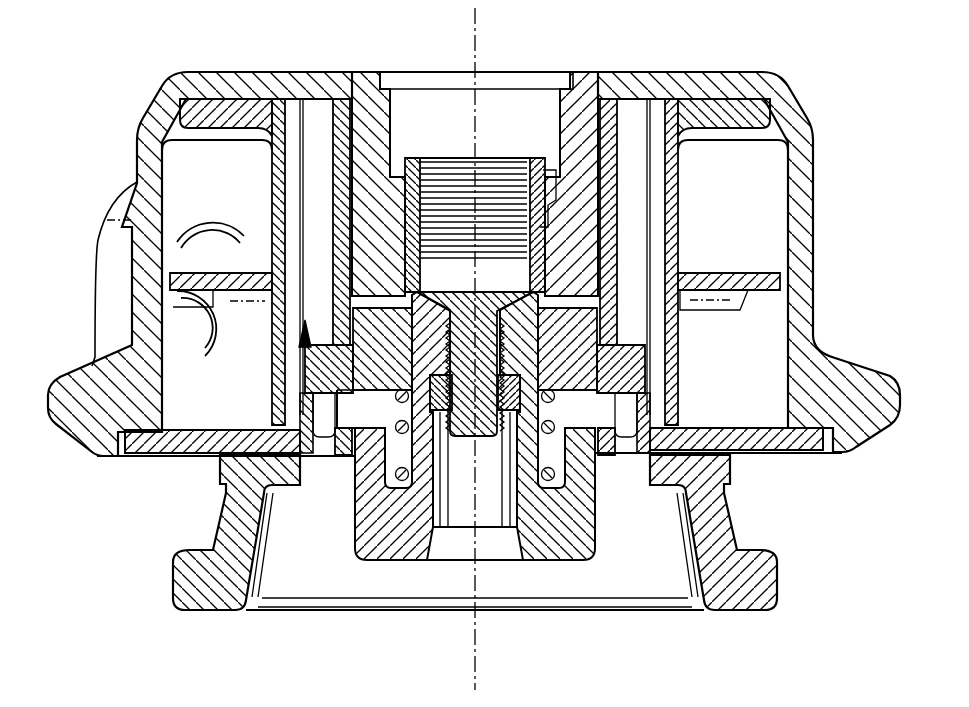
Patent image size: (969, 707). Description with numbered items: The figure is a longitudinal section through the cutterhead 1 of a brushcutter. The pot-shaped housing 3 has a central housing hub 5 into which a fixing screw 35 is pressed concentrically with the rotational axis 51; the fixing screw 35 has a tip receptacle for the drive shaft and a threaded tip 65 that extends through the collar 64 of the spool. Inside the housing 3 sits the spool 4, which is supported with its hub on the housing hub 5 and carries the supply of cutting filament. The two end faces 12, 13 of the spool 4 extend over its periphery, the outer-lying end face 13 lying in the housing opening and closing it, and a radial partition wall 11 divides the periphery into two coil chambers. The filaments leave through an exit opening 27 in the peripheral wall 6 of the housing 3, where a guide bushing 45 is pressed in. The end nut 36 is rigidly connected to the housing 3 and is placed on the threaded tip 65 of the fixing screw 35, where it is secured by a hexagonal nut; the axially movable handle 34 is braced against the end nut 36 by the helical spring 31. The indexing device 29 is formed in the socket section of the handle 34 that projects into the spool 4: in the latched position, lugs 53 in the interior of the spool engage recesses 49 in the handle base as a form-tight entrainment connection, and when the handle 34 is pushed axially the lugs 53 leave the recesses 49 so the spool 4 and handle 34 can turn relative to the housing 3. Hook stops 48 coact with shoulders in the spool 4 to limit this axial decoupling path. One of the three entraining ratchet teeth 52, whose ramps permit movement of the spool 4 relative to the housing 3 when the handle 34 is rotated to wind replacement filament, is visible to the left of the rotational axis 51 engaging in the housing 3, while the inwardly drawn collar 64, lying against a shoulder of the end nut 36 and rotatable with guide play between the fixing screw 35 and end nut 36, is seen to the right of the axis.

The cutterhead 1 is at (804, 100).
The housing 3 is at (168, 98).
The spool 4 is at (270, 106).
The housing hub 5 is at (370, 200).
The peripheral wall 6 is at (147, 178).
The radial partition wall 11 is at (750, 272).
The end face 12 is at (217, 117).
The outer-lying end face 13 is at (190, 448).
The exit opening 27 is at (178, 261).
The indexing device 29 is at (417, 314).
The helical spring 31 is at (386, 314).
The handle 34 is at (742, 568).
The fixing screw 35 is at (560, 230).
The end nut 36 is at (392, 520).
The guide bushing 45 is at (192, 245).
The hook stop 48 is at (300, 352).
The recess 49 is at (590, 384).
The rotational axis 51 is at (480, 673).
The entraining ratchet tooth 52 is at (372, 500).
The lug 53 is at (583, 369).
The collar 64 is at (600, 352).
The threaded tip 65 is at (480, 415).